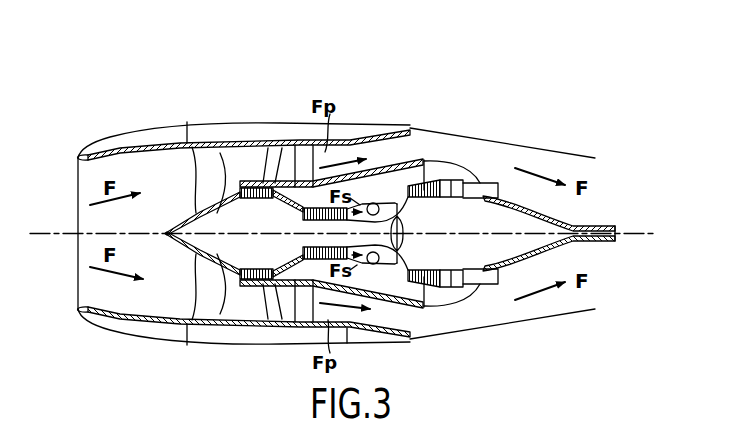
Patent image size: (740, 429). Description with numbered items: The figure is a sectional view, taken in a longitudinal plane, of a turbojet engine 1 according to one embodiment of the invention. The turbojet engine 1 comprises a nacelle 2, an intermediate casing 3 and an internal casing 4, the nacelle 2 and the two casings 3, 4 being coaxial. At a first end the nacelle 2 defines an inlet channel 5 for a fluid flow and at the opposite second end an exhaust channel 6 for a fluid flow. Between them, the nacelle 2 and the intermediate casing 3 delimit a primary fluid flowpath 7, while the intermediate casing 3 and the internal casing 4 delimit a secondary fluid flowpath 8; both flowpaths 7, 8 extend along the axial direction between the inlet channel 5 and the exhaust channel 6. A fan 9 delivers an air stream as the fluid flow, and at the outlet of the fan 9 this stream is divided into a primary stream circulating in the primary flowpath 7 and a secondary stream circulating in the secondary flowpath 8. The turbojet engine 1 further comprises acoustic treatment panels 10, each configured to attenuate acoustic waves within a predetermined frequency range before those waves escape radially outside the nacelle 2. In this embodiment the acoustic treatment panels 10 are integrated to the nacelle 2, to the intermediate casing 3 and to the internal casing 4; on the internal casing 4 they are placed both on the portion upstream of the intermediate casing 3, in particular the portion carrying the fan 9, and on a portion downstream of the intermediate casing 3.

The turbojet engine 1 is at (465, 57).
The nacelle 2 is at (462, 133).
The intermediate casing 3 is at (387, 160).
The internal casing 4 is at (177, 215).
The inlet channel 5 is at (90, 177).
The exhaust channel 6 is at (602, 197).
The primary fluid flowpath 7 is at (295, 145).
The secondary fluid flowpath 8 is at (345, 150).
The fan 9 is at (220, 323).
The acoustic treatment panel 10 is at (193, 147).